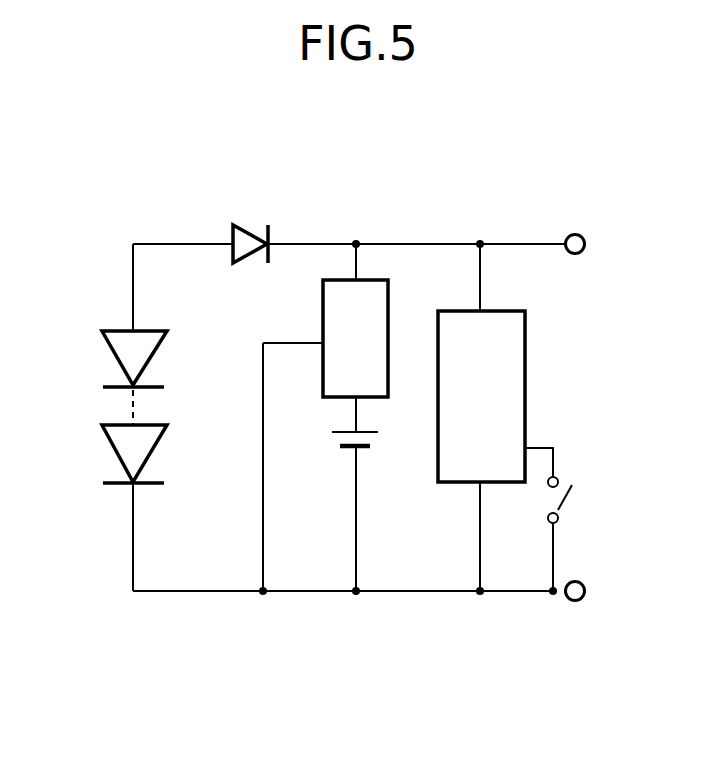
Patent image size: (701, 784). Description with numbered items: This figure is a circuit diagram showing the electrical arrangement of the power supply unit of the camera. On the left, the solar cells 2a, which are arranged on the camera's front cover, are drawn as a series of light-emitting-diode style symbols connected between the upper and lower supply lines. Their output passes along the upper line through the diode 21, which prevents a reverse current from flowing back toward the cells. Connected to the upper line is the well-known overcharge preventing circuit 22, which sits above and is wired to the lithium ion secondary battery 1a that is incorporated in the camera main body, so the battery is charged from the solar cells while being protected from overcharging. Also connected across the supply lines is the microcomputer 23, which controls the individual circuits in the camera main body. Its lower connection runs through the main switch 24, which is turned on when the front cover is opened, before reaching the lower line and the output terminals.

The diode 21 is at (254, 232).
The solar cells 2a is at (112, 357).
The overcharge preventing circuit 22 is at (383, 296).
The lithium ion secondary battery 1a is at (363, 450).
The microcomputer 23 is at (513, 382).
The main switch 24 is at (567, 500).